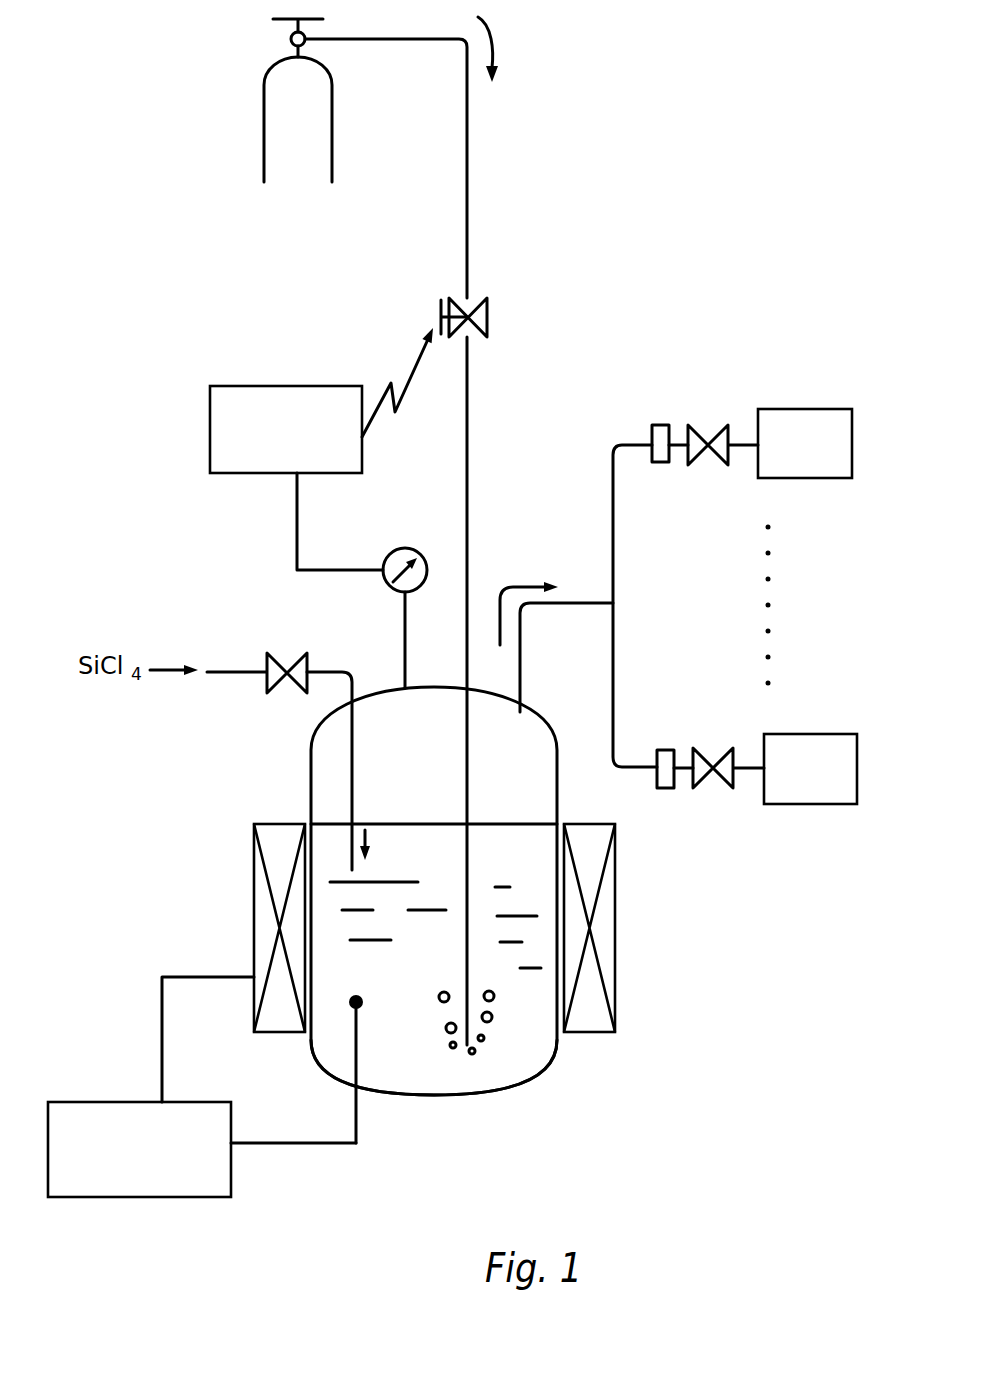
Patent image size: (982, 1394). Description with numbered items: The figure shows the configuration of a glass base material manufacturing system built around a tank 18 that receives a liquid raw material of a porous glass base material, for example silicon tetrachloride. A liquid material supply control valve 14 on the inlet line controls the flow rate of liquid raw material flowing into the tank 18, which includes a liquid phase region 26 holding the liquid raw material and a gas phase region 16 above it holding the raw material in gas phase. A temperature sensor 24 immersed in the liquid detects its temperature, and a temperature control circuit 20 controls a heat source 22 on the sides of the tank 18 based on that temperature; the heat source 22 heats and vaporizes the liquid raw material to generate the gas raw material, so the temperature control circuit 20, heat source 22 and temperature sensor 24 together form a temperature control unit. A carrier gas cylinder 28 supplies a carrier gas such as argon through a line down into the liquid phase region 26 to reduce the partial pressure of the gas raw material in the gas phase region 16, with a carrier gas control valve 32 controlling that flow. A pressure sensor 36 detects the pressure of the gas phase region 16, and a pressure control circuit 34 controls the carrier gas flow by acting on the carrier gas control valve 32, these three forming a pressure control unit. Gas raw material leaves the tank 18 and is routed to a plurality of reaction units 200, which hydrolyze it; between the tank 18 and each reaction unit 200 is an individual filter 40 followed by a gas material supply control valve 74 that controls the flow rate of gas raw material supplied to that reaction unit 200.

The liquid material supply control valve 14 is at (277, 652).
The gas phase region 16 is at (530, 800).
The tank 18 is at (515, 1080).
The temperature control circuit 20 is at (95, 1100).
The heat source 22 is at (275, 822).
The temperature sensor 24 is at (362, 997).
The liquid phase region 26 is at (430, 1080).
The carrier gas cylinder 28 is at (293, 125).
The carrier gas control valve 32 is at (470, 320).
The pressure control circuit 34 is at (210, 433).
The pressure sensor 36 is at (405, 548).
The filter 40 is at (660, 424).
The gas material supply control valve 74 is at (712, 422).
The reaction unit 200 is at (800, 409).